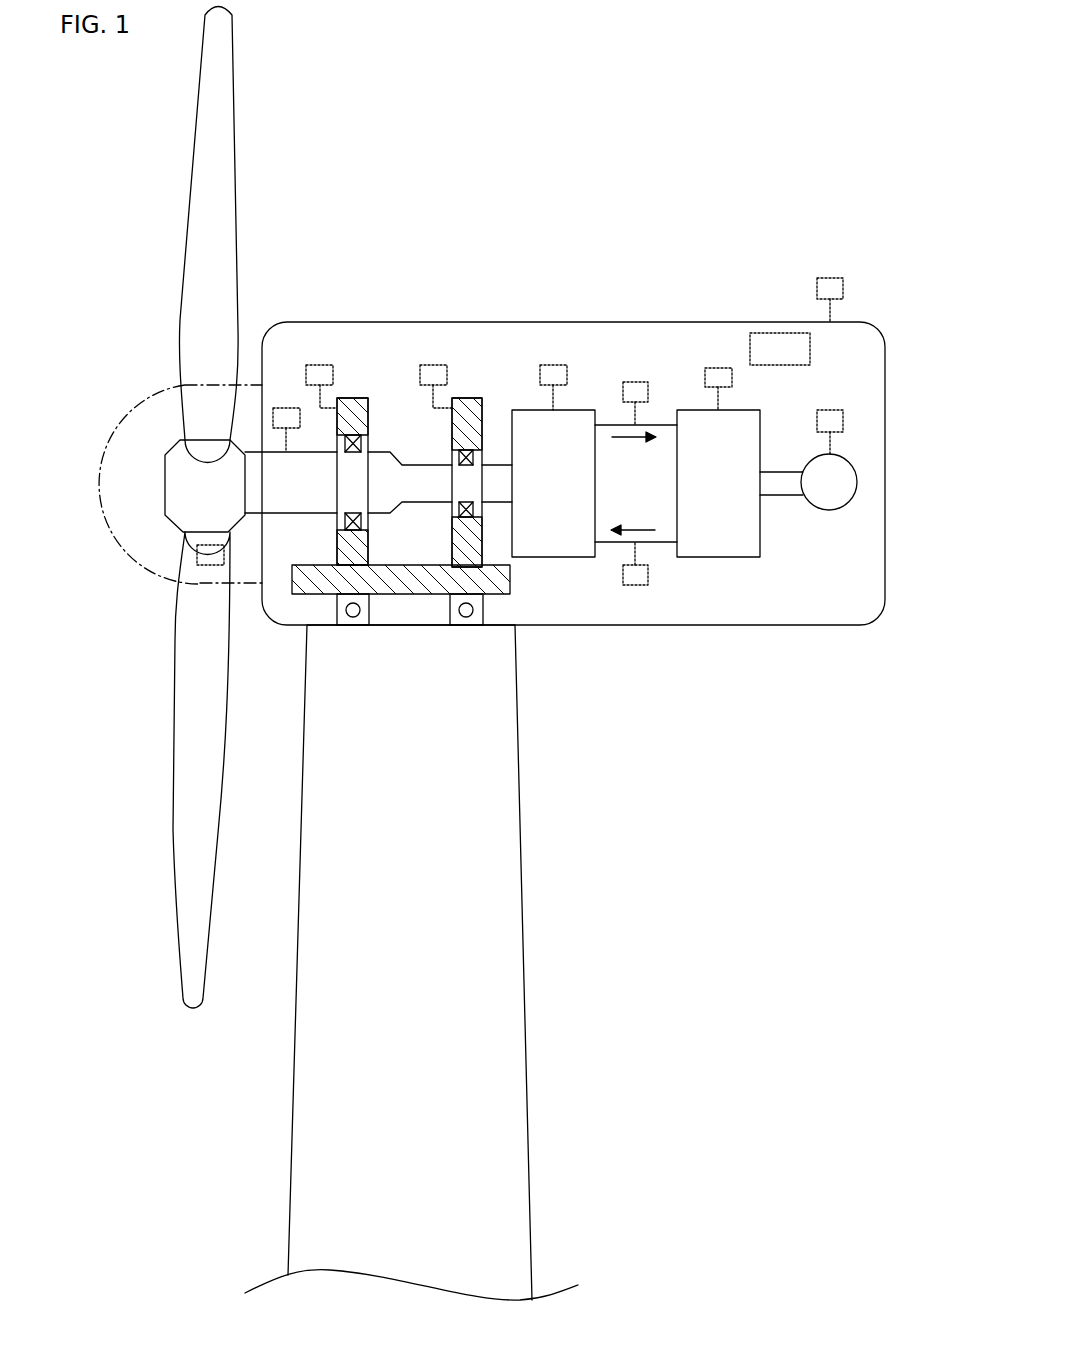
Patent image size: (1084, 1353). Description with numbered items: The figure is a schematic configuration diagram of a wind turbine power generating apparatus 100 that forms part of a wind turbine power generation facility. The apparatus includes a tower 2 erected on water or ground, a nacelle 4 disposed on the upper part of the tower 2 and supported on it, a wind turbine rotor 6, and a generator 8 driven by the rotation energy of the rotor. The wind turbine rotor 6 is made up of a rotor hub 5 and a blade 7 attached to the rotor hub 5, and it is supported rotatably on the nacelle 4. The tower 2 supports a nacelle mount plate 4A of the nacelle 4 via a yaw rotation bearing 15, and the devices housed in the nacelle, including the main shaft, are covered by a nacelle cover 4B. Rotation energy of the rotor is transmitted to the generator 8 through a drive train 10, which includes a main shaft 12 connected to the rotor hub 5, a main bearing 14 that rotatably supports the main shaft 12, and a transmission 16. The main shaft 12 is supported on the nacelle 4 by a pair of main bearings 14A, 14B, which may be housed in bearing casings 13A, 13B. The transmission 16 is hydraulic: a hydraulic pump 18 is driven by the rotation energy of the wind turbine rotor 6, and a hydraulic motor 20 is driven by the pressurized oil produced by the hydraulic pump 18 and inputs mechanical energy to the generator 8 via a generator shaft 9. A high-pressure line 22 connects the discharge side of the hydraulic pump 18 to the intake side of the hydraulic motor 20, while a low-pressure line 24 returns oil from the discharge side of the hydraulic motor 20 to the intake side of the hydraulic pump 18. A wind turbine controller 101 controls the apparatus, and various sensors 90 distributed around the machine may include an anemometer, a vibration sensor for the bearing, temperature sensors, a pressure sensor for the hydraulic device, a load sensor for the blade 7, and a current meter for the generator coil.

The wind turbine power generating apparatus 100 is at (880, 28).
The tower 2 is at (532, 1228).
The nacelle 4 is at (655, 712).
The nacelle mount plate 4A is at (512, 593).
The nacelle cover 4B is at (630, 625).
The rotor hub 5 is at (175, 477).
The wind turbine rotor 6 is at (165, 438).
The blade 7 is at (192, 222).
The generator 8 is at (858, 478).
The generator shaft 9 is at (785, 495).
The drive train 10 is at (636, 473).
The main shaft 12 is at (268, 475).
The bearing casing 13A is at (372, 420).
The bearing casing 13B is at (483, 410).
The main bearing 14 is at (512, 177).
The main bearing 14A is at (352, 440).
The main bearing 14B is at (466, 450).
The yaw rotation bearing 15 is at (462, 618).
The transmission 16 is at (672, 253).
The hydraulic pump 18 is at (585, 410).
The hydraulic motor 20 is at (693, 410).
The high-pressure line 22 is at (662, 425).
The low-pressure line 24 is at (665, 545).
The sensors 90 is at (195, 562).
The wind turbine controller 101 is at (781, 333).